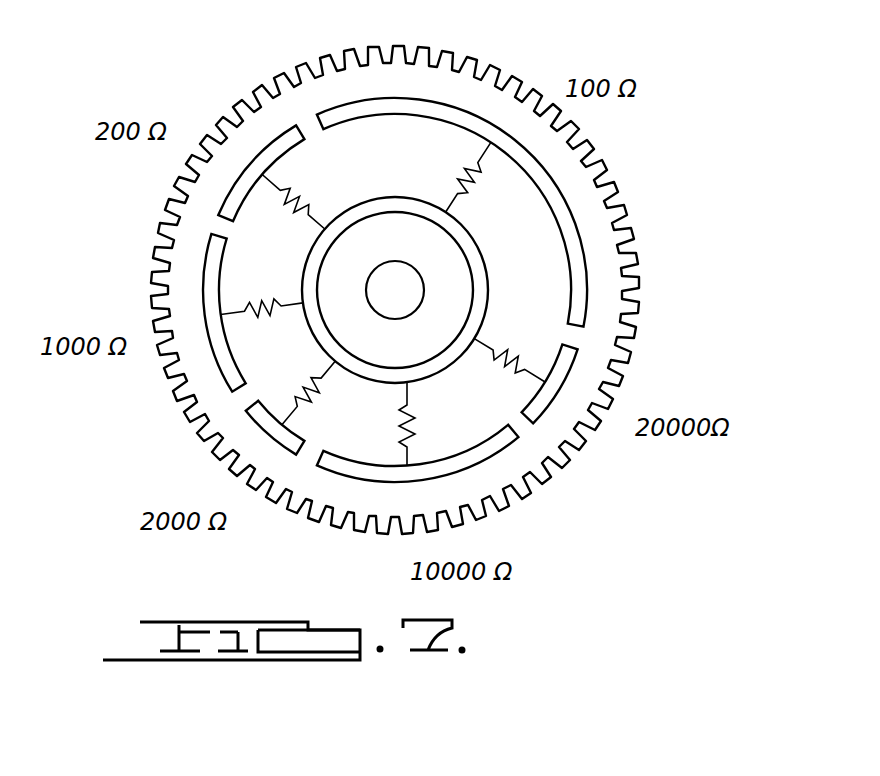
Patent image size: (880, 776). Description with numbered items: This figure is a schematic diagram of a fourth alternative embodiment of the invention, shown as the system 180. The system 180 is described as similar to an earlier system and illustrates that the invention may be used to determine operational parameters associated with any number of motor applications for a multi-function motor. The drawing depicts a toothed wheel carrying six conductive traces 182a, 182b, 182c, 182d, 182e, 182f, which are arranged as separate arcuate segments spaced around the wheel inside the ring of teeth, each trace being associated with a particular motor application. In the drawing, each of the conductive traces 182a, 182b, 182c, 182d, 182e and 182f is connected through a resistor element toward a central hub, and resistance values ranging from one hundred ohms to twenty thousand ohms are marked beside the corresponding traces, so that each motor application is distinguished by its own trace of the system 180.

The system 180 is at (707, 78).
The conductive trace 182a is at (553, 202).
The conductive trace 182b is at (255, 167).
The conductive trace 182c is at (213, 264).
The conductive trace 182d is at (256, 413).
The conductive trace 182e is at (347, 465).
The conductive trace 182f is at (563, 359).